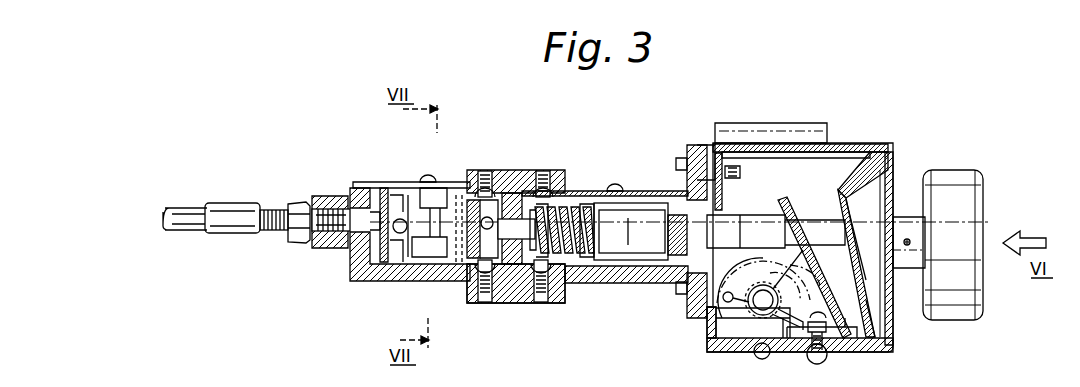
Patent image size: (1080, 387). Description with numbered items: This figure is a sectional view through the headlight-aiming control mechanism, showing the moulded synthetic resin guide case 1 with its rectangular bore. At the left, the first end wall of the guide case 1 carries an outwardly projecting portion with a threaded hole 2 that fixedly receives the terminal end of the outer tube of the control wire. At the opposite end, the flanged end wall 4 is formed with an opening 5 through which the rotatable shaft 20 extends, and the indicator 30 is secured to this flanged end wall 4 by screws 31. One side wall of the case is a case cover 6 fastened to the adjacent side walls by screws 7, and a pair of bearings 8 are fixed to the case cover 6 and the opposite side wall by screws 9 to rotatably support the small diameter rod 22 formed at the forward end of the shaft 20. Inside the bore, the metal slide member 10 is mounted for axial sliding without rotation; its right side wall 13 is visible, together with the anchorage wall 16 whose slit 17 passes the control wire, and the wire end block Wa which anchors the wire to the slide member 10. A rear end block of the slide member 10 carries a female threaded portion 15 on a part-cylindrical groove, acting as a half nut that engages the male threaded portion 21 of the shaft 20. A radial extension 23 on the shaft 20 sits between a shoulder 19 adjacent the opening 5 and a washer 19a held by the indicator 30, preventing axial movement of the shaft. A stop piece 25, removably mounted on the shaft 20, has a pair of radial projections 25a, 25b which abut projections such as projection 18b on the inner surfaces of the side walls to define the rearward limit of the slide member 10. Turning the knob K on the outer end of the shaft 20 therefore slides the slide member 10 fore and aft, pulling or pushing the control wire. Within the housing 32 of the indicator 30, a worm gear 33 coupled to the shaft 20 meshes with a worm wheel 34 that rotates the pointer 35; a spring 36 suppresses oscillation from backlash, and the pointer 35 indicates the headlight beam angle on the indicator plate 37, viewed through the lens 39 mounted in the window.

The guide case 1 is at (340, 259).
The threaded hole 2 is at (328, 203).
The flanged end wall 4 is at (701, 150).
The opening 5 is at (678, 214).
The case cover 6 is at (626, 190).
The screws 7 is at (428, 178).
The bearings 8 is at (510, 170).
The screws 9 is at (484, 170).
The slide member 10 is at (568, 213).
The right side wall 13 is at (470, 292).
The female threaded portion 15 is at (566, 254).
The anchorage wall 16 is at (360, 270).
The slit 17 is at (383, 200).
The projection 18b is at (442, 258).
The shoulder 19 is at (722, 143).
The washer 19a is at (712, 318).
The rotatable shaft 20 is at (736, 218).
The male threaded portion 21 is at (604, 284).
The small diameter rod 22 is at (470, 195).
The radial extension 23 is at (622, 262).
The stop piece 25 is at (551, 204).
The spring washer end 25a is at (546, 205).
The spring washer end 25b is at (582, 204).
The indicator 30 is at (811, 223).
The screws 31 is at (697, 165).
The housing 32 is at (890, 160).
The worm gear 33 is at (775, 165).
The worm wheel 34 is at (750, 272).
The pointer 35 is at (818, 232).
The spring 36 is at (735, 316).
The indicator plate 37 is at (872, 290).
The lens 39 is at (862, 210).
The wire end block Wa is at (405, 262).
The knob K is at (968, 196).